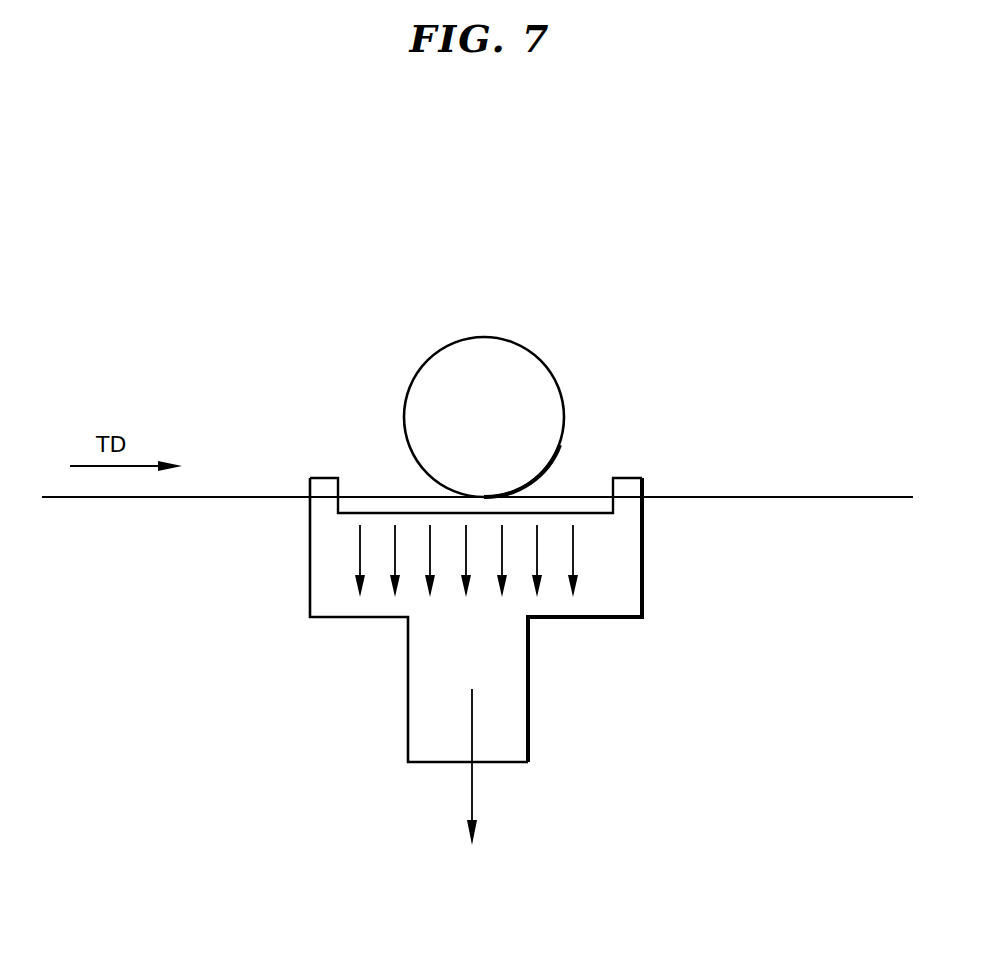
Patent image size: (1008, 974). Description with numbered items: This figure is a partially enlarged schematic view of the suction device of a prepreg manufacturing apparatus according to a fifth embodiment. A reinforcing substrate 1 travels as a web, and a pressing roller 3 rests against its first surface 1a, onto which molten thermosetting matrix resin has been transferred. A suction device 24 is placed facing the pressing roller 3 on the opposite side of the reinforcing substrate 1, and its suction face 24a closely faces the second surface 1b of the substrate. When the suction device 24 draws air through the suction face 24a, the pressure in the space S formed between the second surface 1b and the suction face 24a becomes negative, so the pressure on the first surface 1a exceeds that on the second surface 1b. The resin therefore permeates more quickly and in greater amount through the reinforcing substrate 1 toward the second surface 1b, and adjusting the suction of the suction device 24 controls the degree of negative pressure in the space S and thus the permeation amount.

The reinforcing substrate 1 is at (255, 496).
The first surface 1a is at (538, 496).
The second surface 1b is at (598, 497).
The pressing roller 3 is at (484, 337).
The suction device 24 is at (644, 580).
The suction face 24a is at (582, 507).
The space S is at (387, 505).